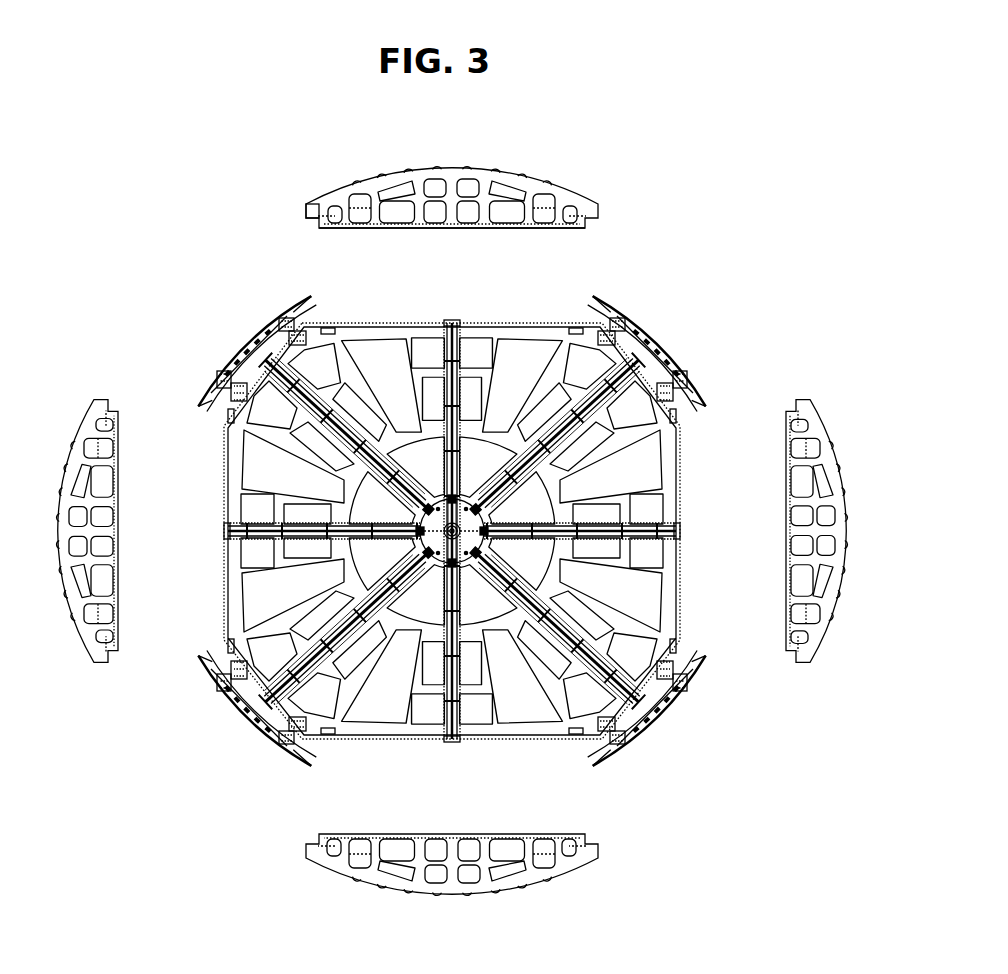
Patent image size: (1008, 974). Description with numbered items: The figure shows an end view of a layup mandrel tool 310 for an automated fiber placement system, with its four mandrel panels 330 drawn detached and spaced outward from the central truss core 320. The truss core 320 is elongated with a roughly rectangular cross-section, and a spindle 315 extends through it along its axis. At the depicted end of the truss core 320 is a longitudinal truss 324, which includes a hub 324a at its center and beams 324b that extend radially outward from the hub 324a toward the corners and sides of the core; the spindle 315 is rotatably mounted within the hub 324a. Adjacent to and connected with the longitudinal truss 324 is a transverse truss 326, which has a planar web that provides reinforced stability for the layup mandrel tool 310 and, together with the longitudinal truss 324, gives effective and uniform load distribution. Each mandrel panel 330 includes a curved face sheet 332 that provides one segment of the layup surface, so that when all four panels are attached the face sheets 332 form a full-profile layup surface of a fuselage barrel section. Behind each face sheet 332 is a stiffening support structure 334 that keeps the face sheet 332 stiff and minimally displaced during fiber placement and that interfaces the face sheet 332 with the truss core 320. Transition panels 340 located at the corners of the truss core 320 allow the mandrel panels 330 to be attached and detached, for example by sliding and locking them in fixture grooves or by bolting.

The layup mandrel tool 310 is at (641, 236).
The spindle 315 is at (436, 522).
The truss core 320 is at (479, 323).
The longitudinal truss 324 is at (453, 741).
The hub 324a is at (263, 533).
The beams 324b is at (370, 570).
The transverse truss 326 is at (553, 726).
The mandrel panel 330 is at (558, 184).
The face sheet 332 is at (337, 198).
The stiffening support structure 334 is at (338, 226).
The transition panel 340 is at (637, 321).